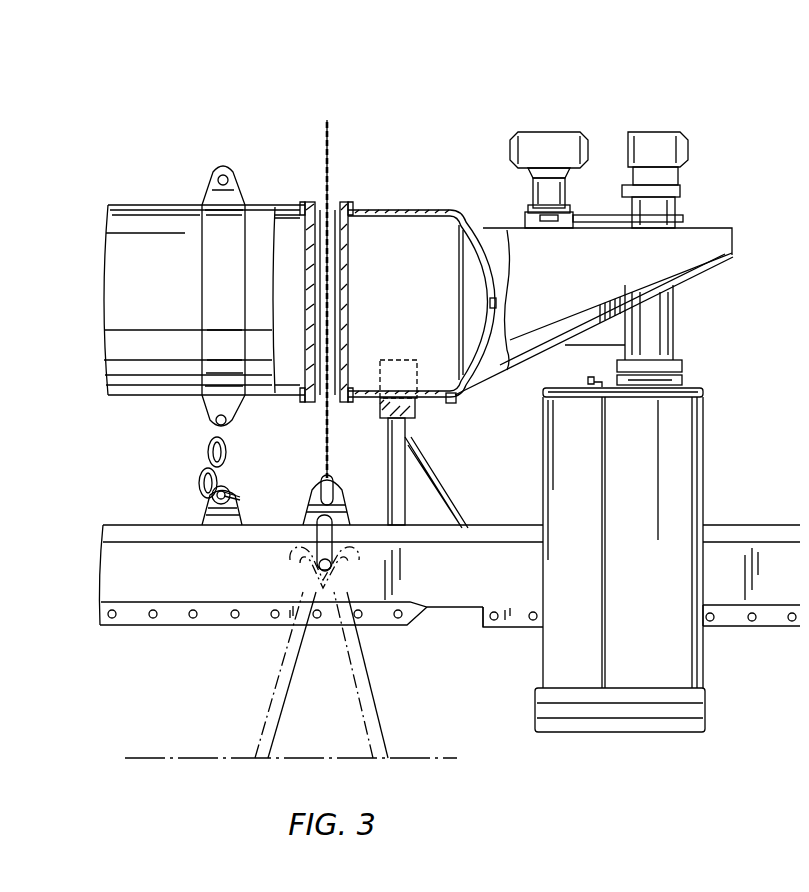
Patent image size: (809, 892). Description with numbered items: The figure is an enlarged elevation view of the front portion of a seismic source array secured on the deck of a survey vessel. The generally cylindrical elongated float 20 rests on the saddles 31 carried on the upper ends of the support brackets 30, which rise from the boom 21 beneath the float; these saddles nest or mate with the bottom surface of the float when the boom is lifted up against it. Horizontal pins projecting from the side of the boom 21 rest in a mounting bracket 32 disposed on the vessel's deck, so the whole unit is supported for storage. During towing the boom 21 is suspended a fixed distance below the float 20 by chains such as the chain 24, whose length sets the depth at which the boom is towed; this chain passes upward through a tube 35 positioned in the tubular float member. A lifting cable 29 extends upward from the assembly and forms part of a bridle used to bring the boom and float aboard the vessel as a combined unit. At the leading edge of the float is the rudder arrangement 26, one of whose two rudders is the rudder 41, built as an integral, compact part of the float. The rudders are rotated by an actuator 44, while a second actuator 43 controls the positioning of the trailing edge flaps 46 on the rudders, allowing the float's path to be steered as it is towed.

The elongated float 20 is at (145, 205).
The boom 21 is at (122, 525).
The chain 24 is at (203, 460).
The rudder arrangement 26 is at (721, 481).
The cable 29 is at (332, 150).
The support bracket 30 is at (440, 481).
The saddle 31 is at (417, 403).
The mounting bracket 32 is at (372, 690).
The tube 35 is at (348, 276).
The rudder 41 is at (705, 415).
The second actuator 43 is at (688, 149).
The actuator 44 is at (510, 154).
The trailing edge flap 46 is at (543, 428).